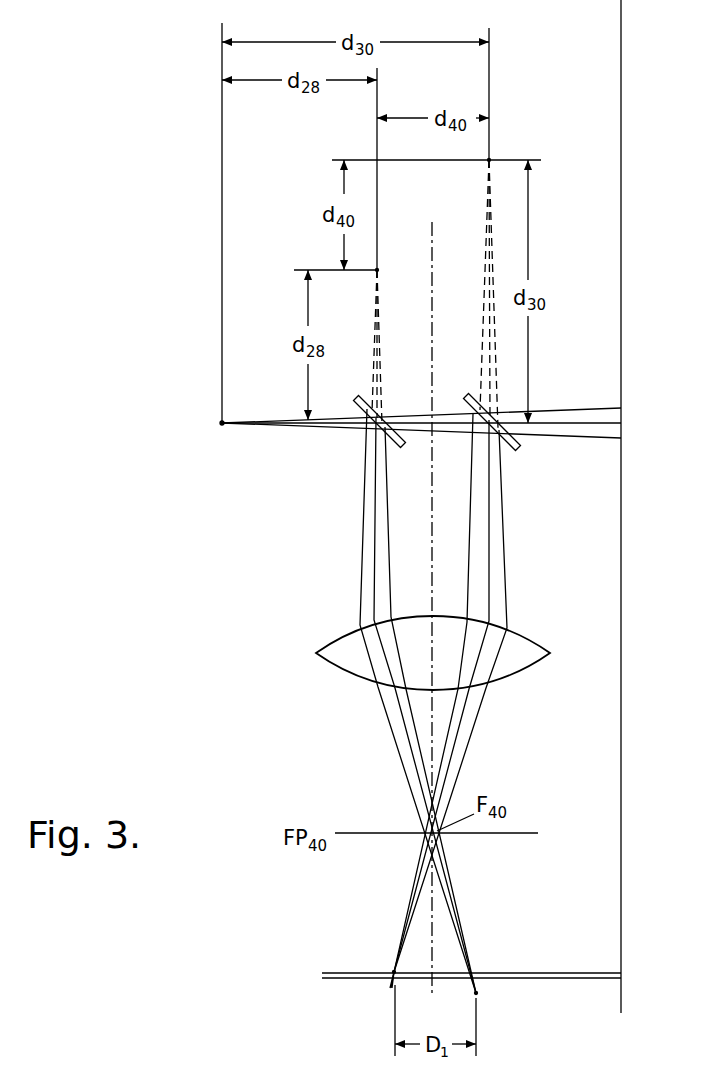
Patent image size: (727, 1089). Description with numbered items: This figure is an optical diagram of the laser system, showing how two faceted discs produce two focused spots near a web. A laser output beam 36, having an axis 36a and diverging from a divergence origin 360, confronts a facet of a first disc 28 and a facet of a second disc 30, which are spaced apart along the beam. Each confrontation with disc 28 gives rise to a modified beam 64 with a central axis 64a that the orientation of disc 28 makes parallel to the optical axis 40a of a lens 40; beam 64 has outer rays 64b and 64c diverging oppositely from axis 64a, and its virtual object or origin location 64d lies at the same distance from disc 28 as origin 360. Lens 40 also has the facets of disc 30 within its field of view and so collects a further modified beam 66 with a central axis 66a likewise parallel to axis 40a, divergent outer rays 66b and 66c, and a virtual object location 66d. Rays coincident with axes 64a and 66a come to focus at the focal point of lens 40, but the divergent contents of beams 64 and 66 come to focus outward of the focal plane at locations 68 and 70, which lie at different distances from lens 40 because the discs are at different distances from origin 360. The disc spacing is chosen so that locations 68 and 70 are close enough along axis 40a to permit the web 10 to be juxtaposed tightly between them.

The web 10 is at (540, 973).
The disc 28 is at (358, 396).
The disc 30 is at (473, 398).
The beam 36 is at (291, 419).
The laser output beam axis 36a is at (326, 427).
The divergence origin 360 is at (222, 423).
The lens 40 is at (538, 653).
The optical axis 40a is at (432, 252).
The modified beam 64 is at (384, 701).
The central axis 64a is at (376, 545).
The outer ray 64b is at (365, 512).
The outer ray 64c is at (388, 568).
The virtual object location 64d is at (377, 270).
The further modified beam 66 is at (476, 701).
The central axis 66a is at (489, 532).
The outer ray 66b is at (472, 562).
The outer ray 66c is at (500, 503).
The virtual object location 66d is at (489, 160).
The focus location 68 is at (477, 993).
The focus location 70 is at (394, 970).